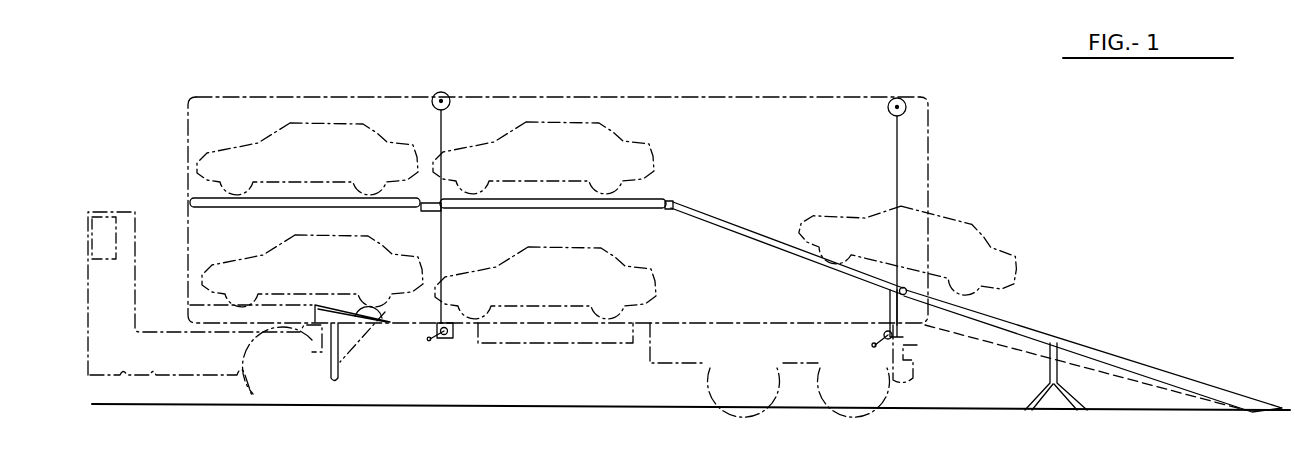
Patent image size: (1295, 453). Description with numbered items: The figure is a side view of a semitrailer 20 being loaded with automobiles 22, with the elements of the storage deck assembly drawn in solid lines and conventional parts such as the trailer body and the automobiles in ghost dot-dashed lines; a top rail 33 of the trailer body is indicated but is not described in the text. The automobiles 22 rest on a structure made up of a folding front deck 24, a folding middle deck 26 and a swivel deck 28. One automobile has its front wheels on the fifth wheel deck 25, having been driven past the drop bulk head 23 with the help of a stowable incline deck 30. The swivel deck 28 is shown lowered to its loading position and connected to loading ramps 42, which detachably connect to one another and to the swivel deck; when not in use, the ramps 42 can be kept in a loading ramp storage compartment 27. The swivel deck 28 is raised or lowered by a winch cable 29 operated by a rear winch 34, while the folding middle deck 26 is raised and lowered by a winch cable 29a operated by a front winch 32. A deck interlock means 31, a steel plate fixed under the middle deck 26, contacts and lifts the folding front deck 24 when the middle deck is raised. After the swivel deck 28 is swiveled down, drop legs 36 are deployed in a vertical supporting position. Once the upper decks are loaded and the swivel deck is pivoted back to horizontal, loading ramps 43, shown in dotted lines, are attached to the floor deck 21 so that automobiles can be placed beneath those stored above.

The semitrailer 20 is at (558, 180).
The floor deck 21 is at (652, 328).
The automobiles 22 is at (313, 120).
The drop bulk head 23 is at (340, 321).
The folding front deck 24 is at (282, 212).
The fifth wheel deck 25 is at (222, 300).
The folding middle deck 26 is at (507, 213).
The loading ramp storage compartment 27 is at (548, 344).
The swivel deck 28 is at (760, 245).
The winch cable 29 is at (905, 122).
The winch cable 29a is at (455, 92).
The stowable incline deck 30 is at (382, 318).
The deck interlock means 31 is at (425, 212).
The front winch 32 is at (455, 338).
The top rail 33 is at (815, 97).
The rear winch 34 is at (880, 345).
The drop legs 36 is at (890, 300).
The loading ramps 42 is at (1013, 327).
The loading ramps 43 is at (985, 345).